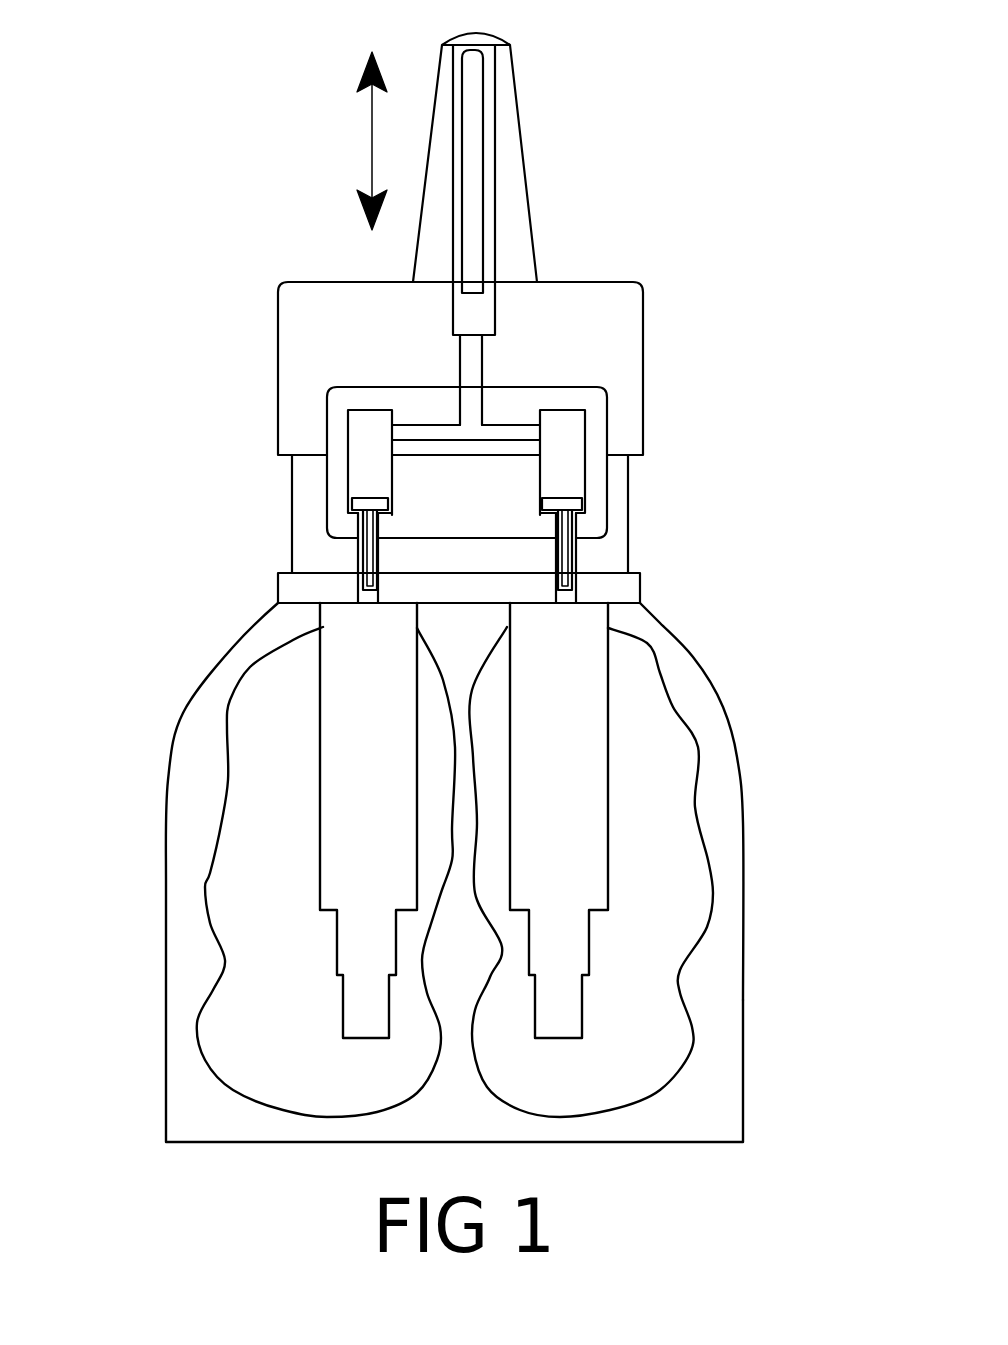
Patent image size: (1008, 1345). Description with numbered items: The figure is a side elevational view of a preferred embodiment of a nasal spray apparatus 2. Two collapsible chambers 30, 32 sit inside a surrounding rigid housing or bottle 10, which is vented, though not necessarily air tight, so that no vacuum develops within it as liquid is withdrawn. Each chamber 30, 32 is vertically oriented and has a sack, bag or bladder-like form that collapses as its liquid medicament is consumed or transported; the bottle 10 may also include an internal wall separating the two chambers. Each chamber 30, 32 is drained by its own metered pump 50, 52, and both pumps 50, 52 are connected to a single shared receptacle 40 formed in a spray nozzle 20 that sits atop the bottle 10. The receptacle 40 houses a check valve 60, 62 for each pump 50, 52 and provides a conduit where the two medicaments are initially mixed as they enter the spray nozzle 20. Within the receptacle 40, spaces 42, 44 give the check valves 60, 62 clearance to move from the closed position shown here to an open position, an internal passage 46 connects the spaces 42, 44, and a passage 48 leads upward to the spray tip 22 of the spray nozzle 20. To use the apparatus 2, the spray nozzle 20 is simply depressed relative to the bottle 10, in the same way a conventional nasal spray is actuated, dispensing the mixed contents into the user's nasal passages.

The nasal spray apparatus 2 is at (258, 230).
The housing or bottle 10 is at (741, 711).
The spray nozzle 20 is at (697, 348).
The spray tip 22 is at (507, 190).
The collapsible chamber 30 is at (212, 923).
The collapsible chamber 32 is at (675, 975).
The receptacle 40 is at (303, 424).
The space 42 is at (362, 467).
The space 44 is at (563, 467).
The internal passage 46 is at (577, 385).
The passage 48 is at (473, 388).
The metered pump 50 is at (353, 817).
The metered pump 52 is at (583, 863).
The check valve 60 is at (355, 513).
The check valve 62 is at (583, 513).